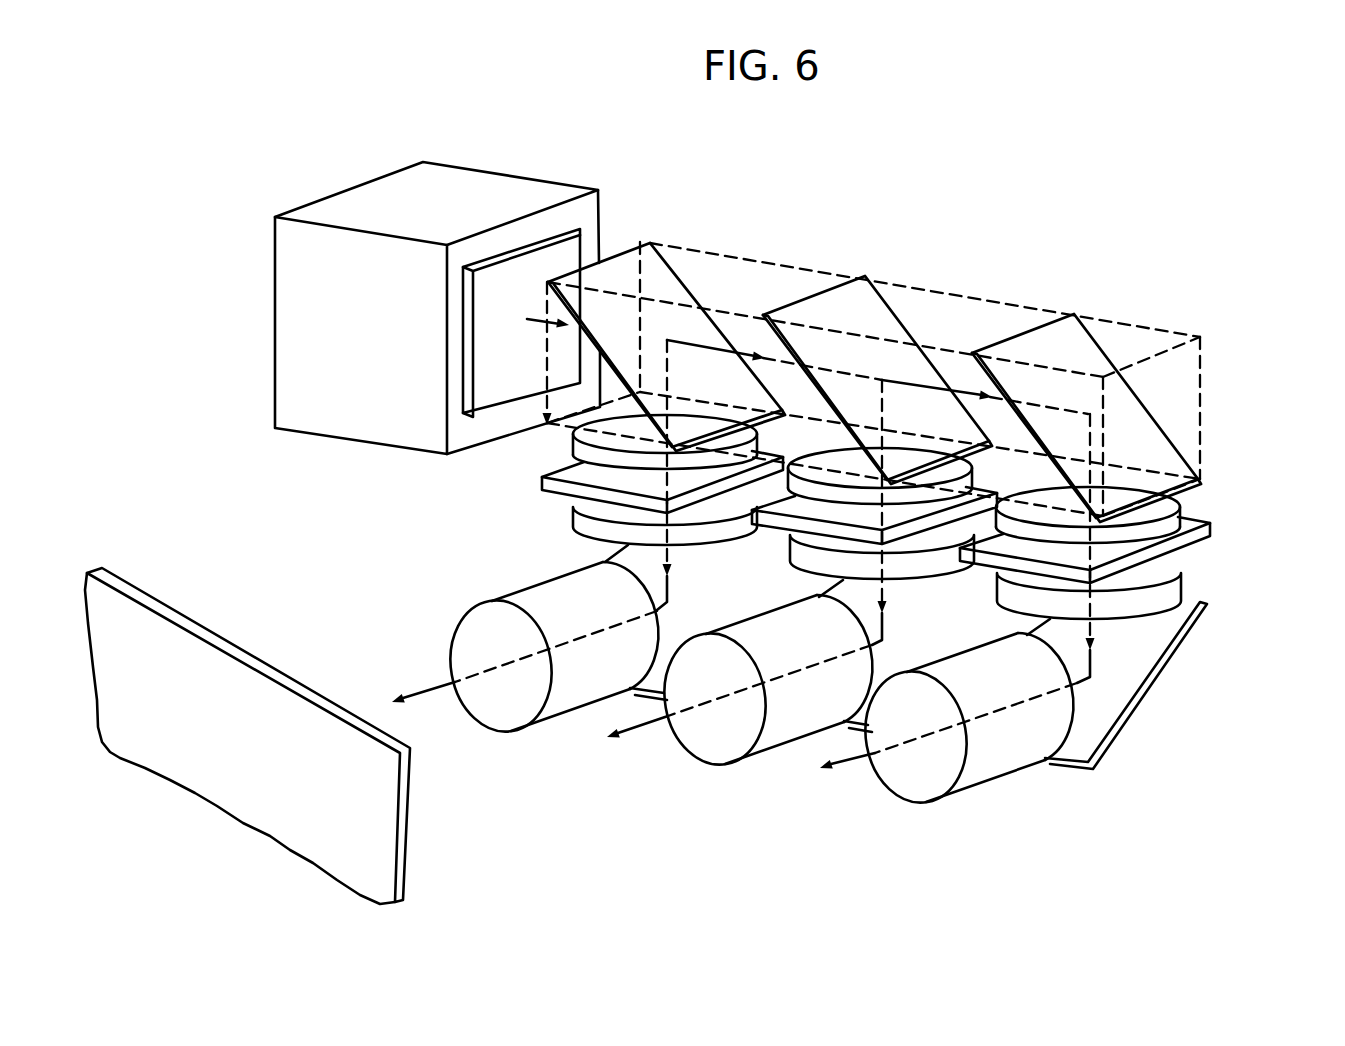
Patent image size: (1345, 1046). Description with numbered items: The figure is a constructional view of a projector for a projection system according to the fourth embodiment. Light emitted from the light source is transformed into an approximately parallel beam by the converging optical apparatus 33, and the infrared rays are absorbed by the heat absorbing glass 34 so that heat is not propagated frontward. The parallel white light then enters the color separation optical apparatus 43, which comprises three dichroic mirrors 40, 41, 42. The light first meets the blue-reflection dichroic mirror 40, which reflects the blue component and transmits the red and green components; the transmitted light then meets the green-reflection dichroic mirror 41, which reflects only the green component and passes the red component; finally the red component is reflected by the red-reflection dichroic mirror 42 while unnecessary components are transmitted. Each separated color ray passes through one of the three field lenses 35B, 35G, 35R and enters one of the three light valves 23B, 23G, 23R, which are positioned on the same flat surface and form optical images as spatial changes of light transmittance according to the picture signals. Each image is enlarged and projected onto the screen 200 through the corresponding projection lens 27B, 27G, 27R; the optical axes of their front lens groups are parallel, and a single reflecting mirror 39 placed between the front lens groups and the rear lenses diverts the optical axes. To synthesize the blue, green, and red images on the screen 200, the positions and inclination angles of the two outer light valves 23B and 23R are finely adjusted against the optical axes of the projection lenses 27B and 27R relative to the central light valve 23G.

The converging optical apparatus 33 is at (330, 196).
The heat absorbing glass 34 is at (543, 237).
The dichroic mirror 40 is at (627, 248).
The dichroic mirror 41 is at (850, 282).
The dichroic mirror 42 is at (1050, 322).
The color separation optical apparatus 43 is at (1205, 362).
The field lens 35B is at (572, 458).
The field lens 35G is at (815, 447).
The field lens 35R is at (1187, 507).
The light valve 23B is at (542, 490).
The light valve 23G is at (772, 520).
The light valve 23R is at (1207, 526).
The projection lens 27B is at (575, 540).
The projection lens 27G is at (860, 576).
The projection lens 27R is at (1063, 728).
The reflecting mirror 39 is at (1183, 650).
The screen 200 is at (183, 616).